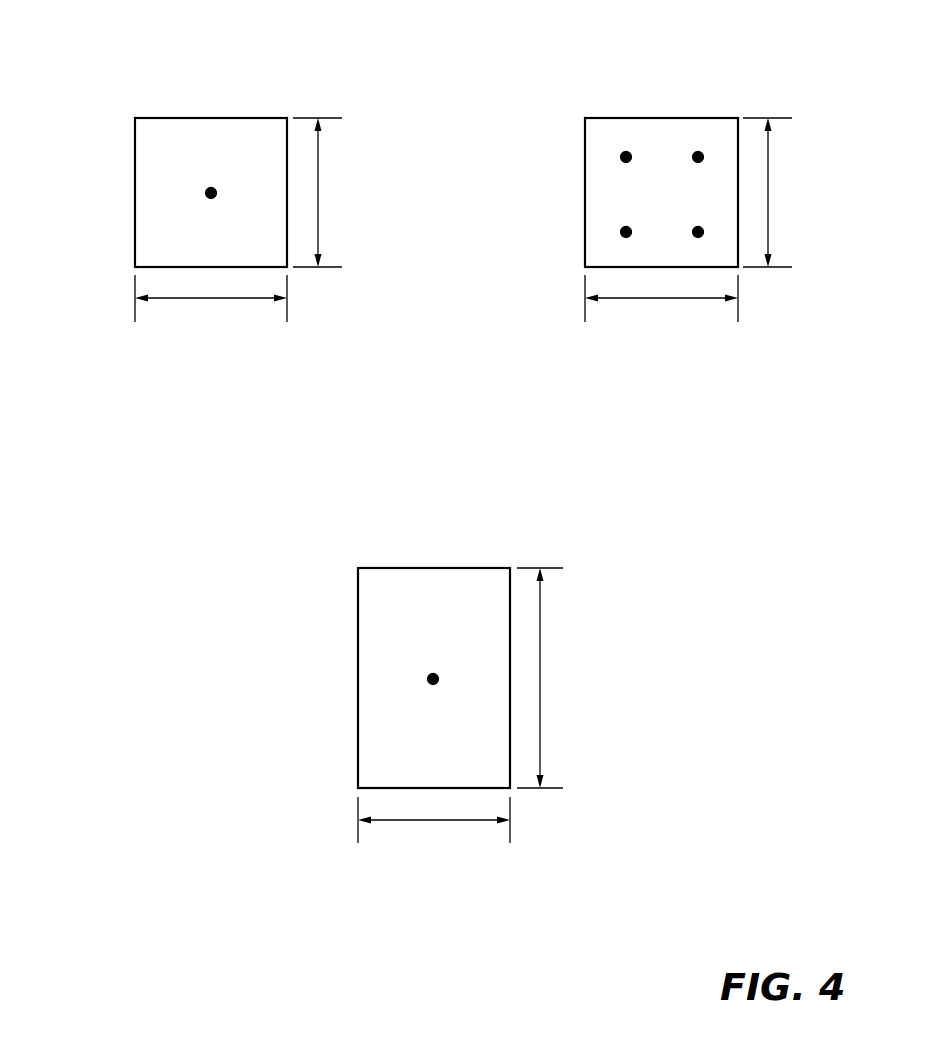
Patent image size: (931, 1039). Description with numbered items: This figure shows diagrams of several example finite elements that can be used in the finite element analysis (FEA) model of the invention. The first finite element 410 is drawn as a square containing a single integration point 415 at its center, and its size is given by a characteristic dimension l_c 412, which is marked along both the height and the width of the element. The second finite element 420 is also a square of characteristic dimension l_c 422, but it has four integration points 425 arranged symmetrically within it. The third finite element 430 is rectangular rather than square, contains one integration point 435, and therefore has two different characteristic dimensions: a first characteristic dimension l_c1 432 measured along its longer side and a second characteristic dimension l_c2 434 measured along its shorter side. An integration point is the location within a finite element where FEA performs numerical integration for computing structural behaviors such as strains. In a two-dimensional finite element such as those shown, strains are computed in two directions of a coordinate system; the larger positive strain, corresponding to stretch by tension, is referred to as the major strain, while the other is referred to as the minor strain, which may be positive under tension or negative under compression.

The first finite element 410 is at (214, 58).
The characteristic dimension l_c 412 is at (257, 240).
The integration point 415 is at (197, 200).
The second finite element 420 is at (664, 58).
The characteristic dimension l_c 422 is at (707, 240).
The integration points 425 is at (620, 167).
The third finite element 430 is at (436, 545).
The characteristic dimension l_c1 432 is at (560, 678).
The characteristic dimension l_c2 434 is at (434, 842).
The integration point 435 is at (423, 687).